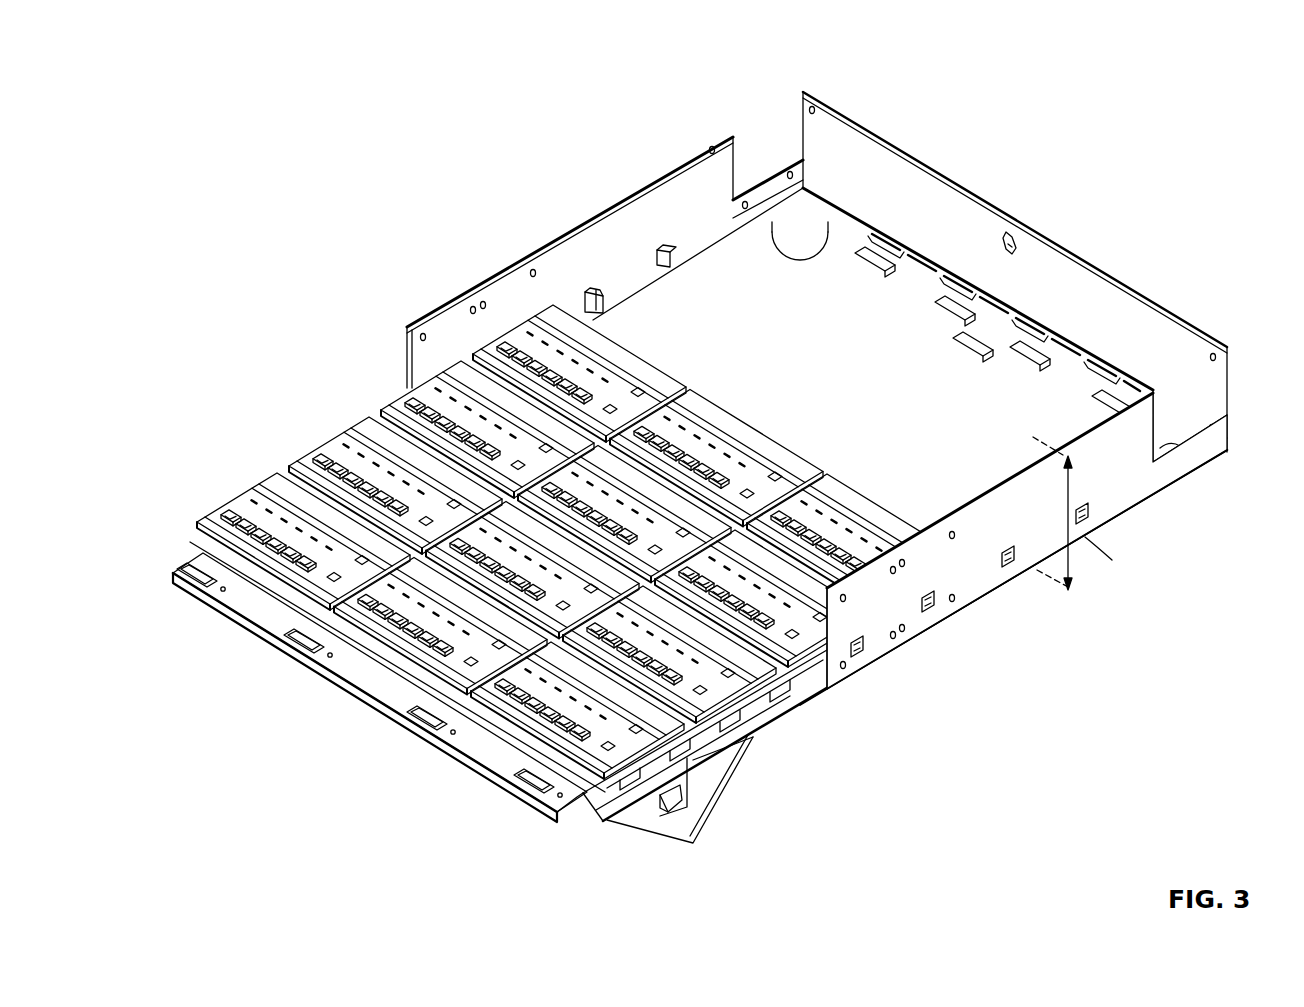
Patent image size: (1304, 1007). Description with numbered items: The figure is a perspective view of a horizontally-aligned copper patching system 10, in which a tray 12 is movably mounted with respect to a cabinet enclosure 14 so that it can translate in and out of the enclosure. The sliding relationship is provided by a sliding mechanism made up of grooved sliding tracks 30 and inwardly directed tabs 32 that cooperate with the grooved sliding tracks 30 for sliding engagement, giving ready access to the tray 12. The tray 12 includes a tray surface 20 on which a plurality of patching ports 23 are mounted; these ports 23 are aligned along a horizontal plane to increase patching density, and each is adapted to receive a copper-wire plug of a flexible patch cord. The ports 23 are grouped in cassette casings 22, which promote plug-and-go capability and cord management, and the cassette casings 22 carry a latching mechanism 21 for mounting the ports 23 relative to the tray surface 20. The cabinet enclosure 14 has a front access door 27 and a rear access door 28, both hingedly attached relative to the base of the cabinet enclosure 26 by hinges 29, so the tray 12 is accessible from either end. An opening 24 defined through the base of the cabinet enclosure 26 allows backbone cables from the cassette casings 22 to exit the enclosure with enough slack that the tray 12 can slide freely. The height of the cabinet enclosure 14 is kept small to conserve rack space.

The horizontally-aligned copper patching system 10 is at (1122, 95).
The tray 12 is at (393, 741).
The cabinet enclosure 14 is at (637, 121).
The tray surface 20 is at (585, 800).
The latching mechanism 21 is at (627, 780).
The cassette casing 22 is at (275, 478).
The patching port 23 is at (225, 512).
The opening 24 is at (790, 238).
The base of the cabinet enclosure 26 is at (1190, 445).
The front access door 27 is at (690, 830).
The rear access door 28 is at (1115, 300).
The hinge 29 is at (880, 240).
The grooved sliding track 30 is at (690, 760).
The inwardly directed tab 32 is at (590, 300).